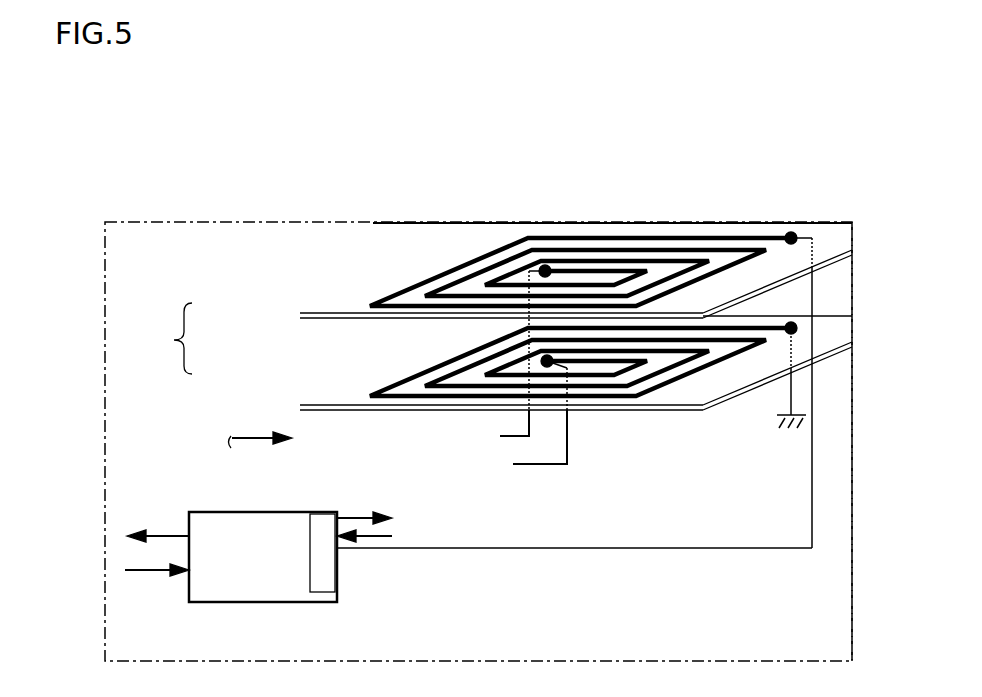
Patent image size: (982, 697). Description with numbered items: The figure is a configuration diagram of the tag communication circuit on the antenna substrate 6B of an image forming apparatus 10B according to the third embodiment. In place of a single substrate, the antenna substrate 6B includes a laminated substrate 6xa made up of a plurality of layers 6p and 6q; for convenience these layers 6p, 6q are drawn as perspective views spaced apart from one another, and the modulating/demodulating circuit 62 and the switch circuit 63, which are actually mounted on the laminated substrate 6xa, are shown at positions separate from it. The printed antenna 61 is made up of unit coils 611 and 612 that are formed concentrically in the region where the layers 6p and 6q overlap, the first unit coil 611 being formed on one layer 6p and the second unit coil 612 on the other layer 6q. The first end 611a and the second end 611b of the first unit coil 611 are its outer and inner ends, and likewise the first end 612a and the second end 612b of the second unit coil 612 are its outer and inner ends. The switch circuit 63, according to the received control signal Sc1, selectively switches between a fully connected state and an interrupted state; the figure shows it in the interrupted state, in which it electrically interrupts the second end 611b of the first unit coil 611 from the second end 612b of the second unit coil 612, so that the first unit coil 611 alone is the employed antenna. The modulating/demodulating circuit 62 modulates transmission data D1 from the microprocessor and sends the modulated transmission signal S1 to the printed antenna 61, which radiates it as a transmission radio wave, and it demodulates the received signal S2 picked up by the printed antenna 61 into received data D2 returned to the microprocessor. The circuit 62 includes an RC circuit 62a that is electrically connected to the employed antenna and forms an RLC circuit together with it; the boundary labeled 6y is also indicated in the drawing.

The image forming apparatus 10B is at (147, 197).
The antenna substrate 6B is at (554, 267).
The printed antenna 61 is at (523, 245).
The first unit coil 611 is at (368, 305).
The first end of the first unit coil 611a is at (794, 242).
The second end of the first unit coil 611b is at (541, 267).
The second unit coil 612 is at (370, 397).
The first end of the second unit coil 612a is at (794, 332).
The second end of the second unit coil 612b is at (543, 357).
The layer 6p is at (300, 316).
The layer 6q is at (300, 410).
The laminated substrate 6xa is at (162, 338).
The boundary of sensor region 6y is at (862, 521).
The modulating/demodulating circuit 62 is at (263, 571).
The RC circuit 62a is at (322, 594).
The switch circuit 63 is at (508, 476).
The control signal Sc1 is at (258, 427).
The transmission data D1 is at (157, 589).
The received data D2 is at (158, 517).
The transmission signal S1 is at (380, 513).
The received signal S2 is at (380, 535).